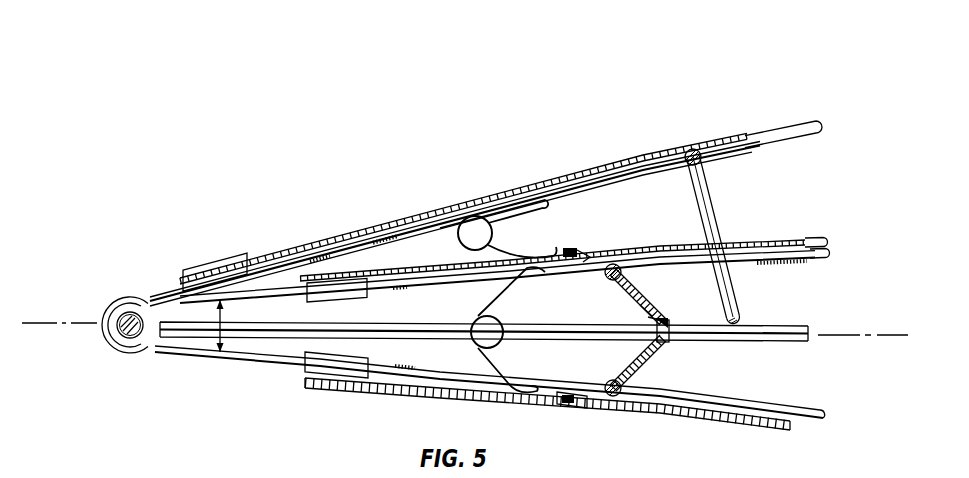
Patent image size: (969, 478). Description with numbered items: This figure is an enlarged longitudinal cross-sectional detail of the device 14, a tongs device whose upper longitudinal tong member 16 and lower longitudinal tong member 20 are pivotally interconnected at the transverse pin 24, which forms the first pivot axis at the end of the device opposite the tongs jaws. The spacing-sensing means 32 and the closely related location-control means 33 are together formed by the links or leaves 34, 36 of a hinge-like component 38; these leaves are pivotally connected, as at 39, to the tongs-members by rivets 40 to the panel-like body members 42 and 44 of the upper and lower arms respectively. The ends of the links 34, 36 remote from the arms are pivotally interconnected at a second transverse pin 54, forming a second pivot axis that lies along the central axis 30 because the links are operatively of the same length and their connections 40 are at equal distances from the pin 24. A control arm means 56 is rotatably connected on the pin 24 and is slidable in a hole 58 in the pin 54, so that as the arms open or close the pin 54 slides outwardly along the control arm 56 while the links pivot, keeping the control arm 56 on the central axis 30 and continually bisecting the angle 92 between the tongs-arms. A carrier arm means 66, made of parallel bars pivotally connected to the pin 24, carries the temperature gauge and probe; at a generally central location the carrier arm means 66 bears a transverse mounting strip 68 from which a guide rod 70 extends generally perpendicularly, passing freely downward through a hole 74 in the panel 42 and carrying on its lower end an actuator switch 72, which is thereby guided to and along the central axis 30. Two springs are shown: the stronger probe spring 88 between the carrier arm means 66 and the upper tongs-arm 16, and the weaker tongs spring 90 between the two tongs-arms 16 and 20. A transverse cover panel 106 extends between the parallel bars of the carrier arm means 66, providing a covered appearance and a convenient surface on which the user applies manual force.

The device 14 is at (794, 112).
The upper longitudinal tong member 16 is at (772, 243).
The lower longitudinal tong member 20 is at (740, 407).
The transverse pin 24 is at (127, 332).
The central axis 30 is at (48, 323).
The spacing-sensing means 32 is at (490, 397).
The location-control means 33 is at (293, 348).
The link or leaf 34 is at (658, 296).
The link or leaf 36 is at (665, 356).
The hinge-like component 38 is at (673, 318).
The pivotal connection 39 is at (610, 281).
The rivets 40 is at (583, 250).
The panel-like body member 42 is at (646, 250).
The panel-like body member 44 is at (677, 420).
The transverse pin 54 is at (647, 312).
The control arm means 56 is at (407, 322).
The hole 58 is at (657, 319).
The carrier arm means 66 is at (413, 224).
The transverse mounting strip 68 is at (688, 148).
The guide rod 70 is at (723, 224).
The actuator switch 72 is at (742, 316).
The hole 74 is at (731, 243).
The probe spring 88 is at (502, 247).
The tongs spring 90 is at (497, 366).
The angle 92 is at (225, 327).
The transverse cover panel 106 is at (568, 175).